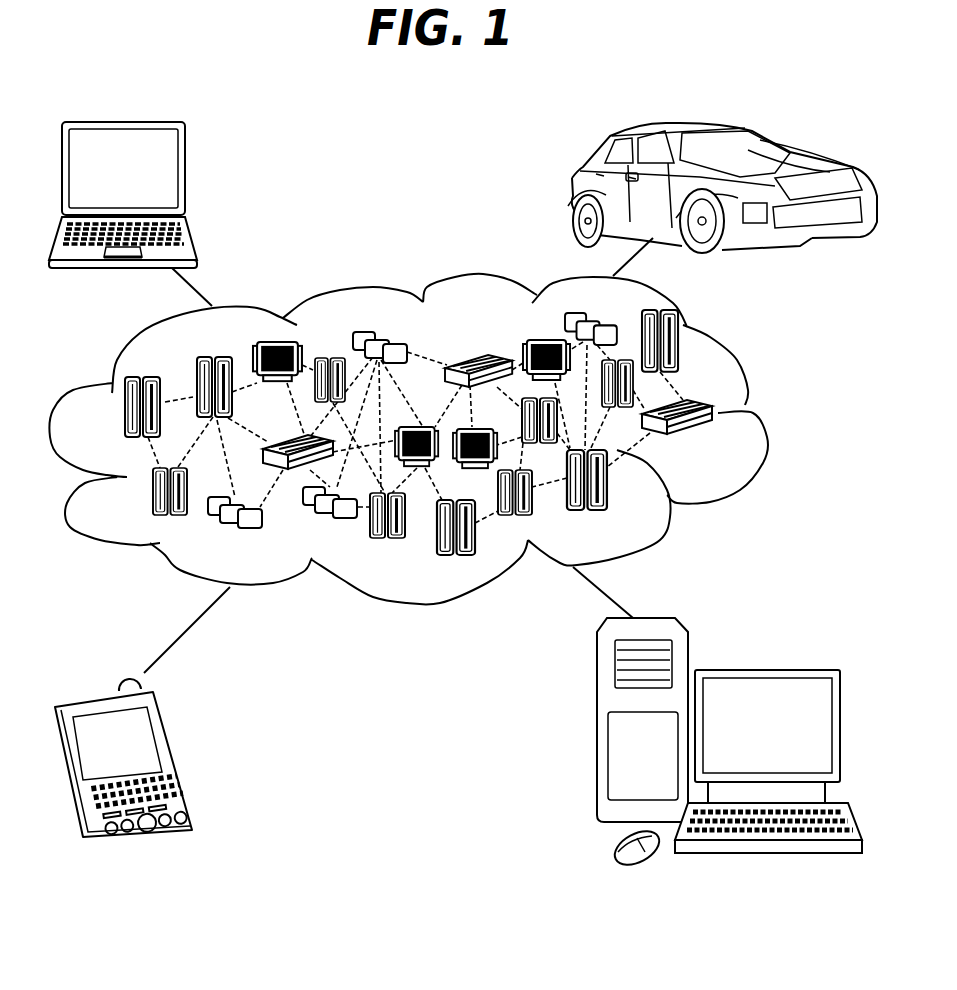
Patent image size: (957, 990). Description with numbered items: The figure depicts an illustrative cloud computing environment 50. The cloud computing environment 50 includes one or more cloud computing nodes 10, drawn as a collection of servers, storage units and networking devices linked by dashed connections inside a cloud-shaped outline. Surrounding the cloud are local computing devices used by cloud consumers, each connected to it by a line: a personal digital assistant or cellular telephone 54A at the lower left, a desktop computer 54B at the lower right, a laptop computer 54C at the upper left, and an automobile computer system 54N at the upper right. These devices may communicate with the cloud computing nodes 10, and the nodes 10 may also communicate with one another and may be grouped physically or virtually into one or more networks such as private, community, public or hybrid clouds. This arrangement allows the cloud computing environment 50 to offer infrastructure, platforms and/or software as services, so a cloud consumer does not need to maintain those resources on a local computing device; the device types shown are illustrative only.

The cloud computing nodes 10 is at (718, 445).
The cloud computing environment 50 is at (763, 414).
The personal digital assistant or cellular telephone 54A is at (178, 753).
The desktop computer 54B is at (762, 667).
The laptop computer 54C is at (186, 178).
The automobile computer system 54N is at (574, 193).